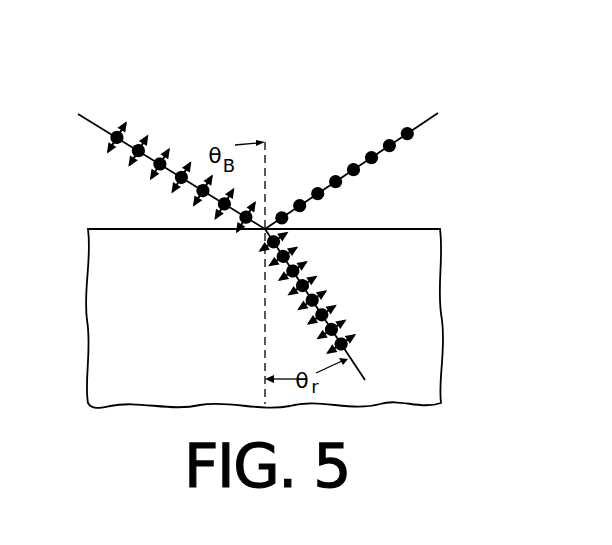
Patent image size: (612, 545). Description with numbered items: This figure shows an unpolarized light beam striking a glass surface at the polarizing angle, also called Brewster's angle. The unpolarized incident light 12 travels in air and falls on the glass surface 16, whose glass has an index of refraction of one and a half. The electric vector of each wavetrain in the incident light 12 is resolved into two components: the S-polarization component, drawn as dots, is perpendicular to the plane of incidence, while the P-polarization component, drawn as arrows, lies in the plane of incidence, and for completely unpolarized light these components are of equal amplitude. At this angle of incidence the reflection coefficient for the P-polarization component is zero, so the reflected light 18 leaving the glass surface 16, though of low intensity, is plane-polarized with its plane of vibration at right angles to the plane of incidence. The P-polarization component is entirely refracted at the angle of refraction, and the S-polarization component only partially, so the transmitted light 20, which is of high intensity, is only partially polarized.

The unpolarized incident light 12 is at (97, 125).
The glass surface 16 is at (124, 300).
The reflected light 18 is at (363, 165).
The transmitted light 20 is at (343, 330).